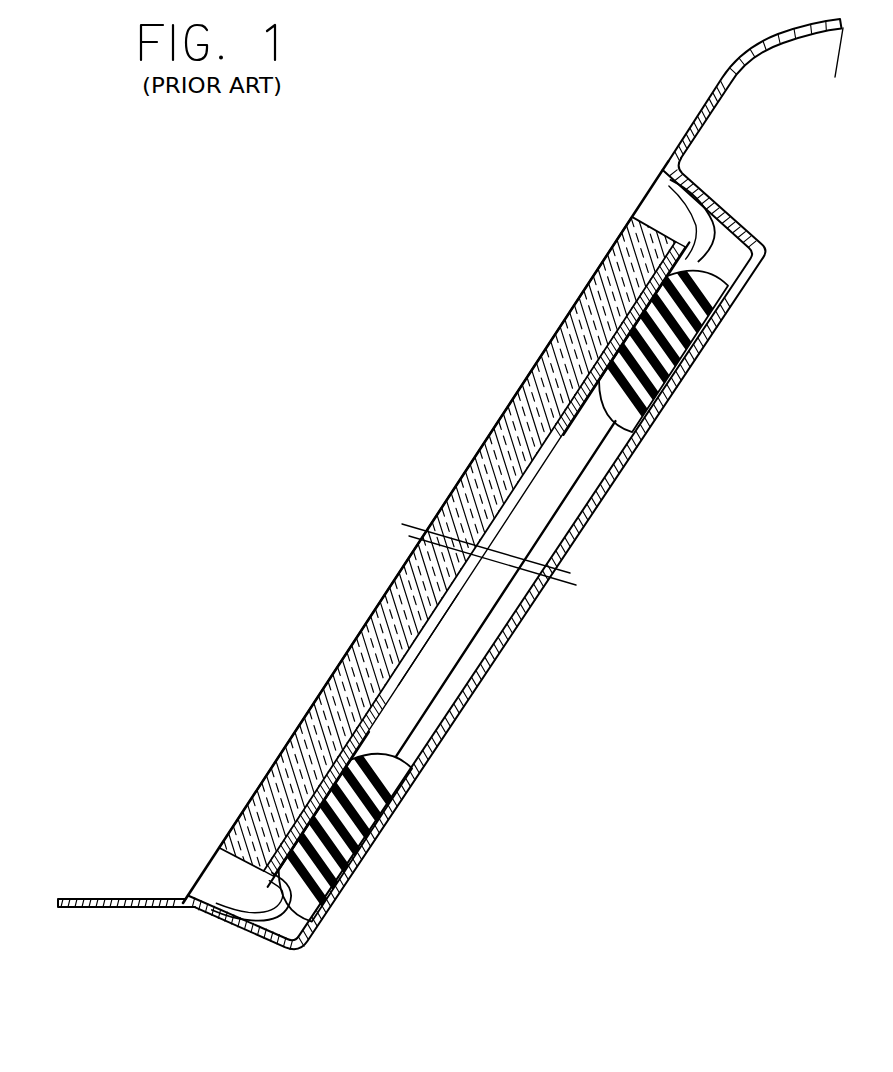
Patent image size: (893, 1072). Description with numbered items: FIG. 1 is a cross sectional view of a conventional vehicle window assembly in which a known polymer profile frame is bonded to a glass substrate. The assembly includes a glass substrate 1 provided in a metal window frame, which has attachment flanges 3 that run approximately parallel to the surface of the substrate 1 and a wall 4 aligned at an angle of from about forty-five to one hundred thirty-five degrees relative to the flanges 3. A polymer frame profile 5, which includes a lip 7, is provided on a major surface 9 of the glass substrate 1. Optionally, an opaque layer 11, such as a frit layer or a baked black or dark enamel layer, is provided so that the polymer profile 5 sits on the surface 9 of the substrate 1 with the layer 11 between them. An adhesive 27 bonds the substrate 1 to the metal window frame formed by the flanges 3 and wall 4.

The glass substrate 1 is at (495, 447).
The attachment flanges 3 is at (666, 388).
The wall 4 is at (735, 223).
The polymer frame profile 5 is at (625, 312).
The lip 7 is at (668, 196).
The major surface 9 is at (425, 655).
The opaque layer 11 is at (580, 412).
The adhesive 27 is at (688, 392).